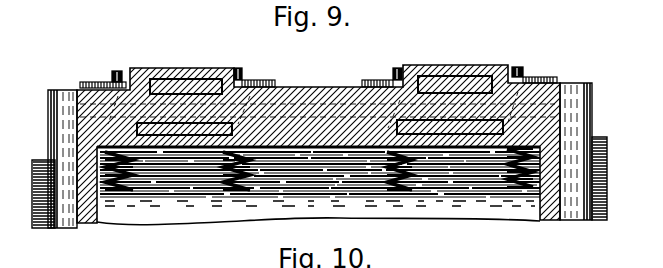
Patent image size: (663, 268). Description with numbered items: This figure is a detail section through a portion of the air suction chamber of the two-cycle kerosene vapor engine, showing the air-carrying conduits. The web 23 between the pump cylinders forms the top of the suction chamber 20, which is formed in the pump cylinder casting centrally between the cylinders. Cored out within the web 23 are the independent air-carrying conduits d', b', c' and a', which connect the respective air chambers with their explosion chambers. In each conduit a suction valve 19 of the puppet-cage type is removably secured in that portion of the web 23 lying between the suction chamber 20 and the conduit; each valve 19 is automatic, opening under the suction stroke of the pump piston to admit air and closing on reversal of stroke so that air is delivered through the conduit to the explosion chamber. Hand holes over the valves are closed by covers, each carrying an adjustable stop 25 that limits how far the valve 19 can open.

The web 23 is at (308, 92).
The adjustable stop 25 is at (398, 70).
The suction valve 19 is at (126, 183).
The suction chamber 20 is at (297, 207).
The air-carrying conduit d' is at (186, 66).
The air-carrying conduit b' is at (455, 62).
The air-carrying conduit c' is at (184, 191).
The air-carrying conduit a' is at (450, 190).